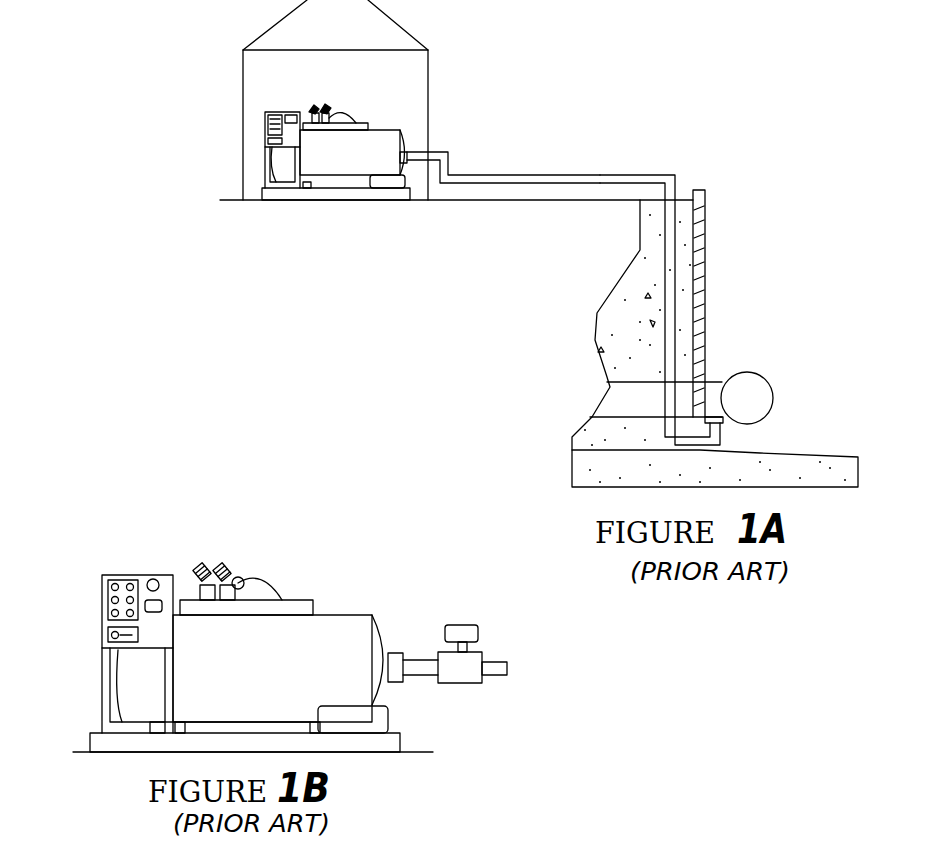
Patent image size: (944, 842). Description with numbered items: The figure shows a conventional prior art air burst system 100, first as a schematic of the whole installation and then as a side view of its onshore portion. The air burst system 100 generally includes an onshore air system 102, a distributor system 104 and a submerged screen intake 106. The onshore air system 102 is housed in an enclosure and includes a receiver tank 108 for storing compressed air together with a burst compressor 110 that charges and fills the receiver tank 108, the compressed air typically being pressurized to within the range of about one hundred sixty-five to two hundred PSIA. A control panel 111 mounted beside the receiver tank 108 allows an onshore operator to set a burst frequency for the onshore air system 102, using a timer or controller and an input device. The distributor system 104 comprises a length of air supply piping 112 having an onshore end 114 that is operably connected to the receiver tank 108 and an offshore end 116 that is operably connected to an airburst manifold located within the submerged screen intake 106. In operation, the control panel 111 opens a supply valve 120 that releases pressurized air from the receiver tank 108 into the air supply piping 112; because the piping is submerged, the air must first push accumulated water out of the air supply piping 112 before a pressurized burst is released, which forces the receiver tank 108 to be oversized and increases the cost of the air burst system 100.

In FIG. 1A, the air burst system 100 is at (737, 151).
In FIG. 1A, the onshore air system 102 is at (430, 100).
In FIG. 1B, the onshore air system 102 is at (334, 564).
In FIG. 1A, the distributor system 104 is at (640, 175).
In FIG. 1B, the distributor system 104 is at (462, 625).
In FIG. 1A, the submerged screen intake 106 is at (760, 373).
In FIG. 1B, the receiver tank 108 is at (338, 615).
In FIG. 1B, the burst compressor 110 is at (213, 583).
In FIG. 1B, the control panel 111 is at (97, 625).
In FIG. 1A, the air supply piping 112 is at (578, 175).
In FIG. 1B, the air supply piping 112 is at (490, 680).
In FIG. 1A, the onshore end 114 is at (409, 150).
In FIG. 1B, the onshore end 114 is at (418, 676).
In FIG. 1A, the offshore end 116 is at (722, 425).
In FIG. 1B, the supply valve 120 is at (478, 651).